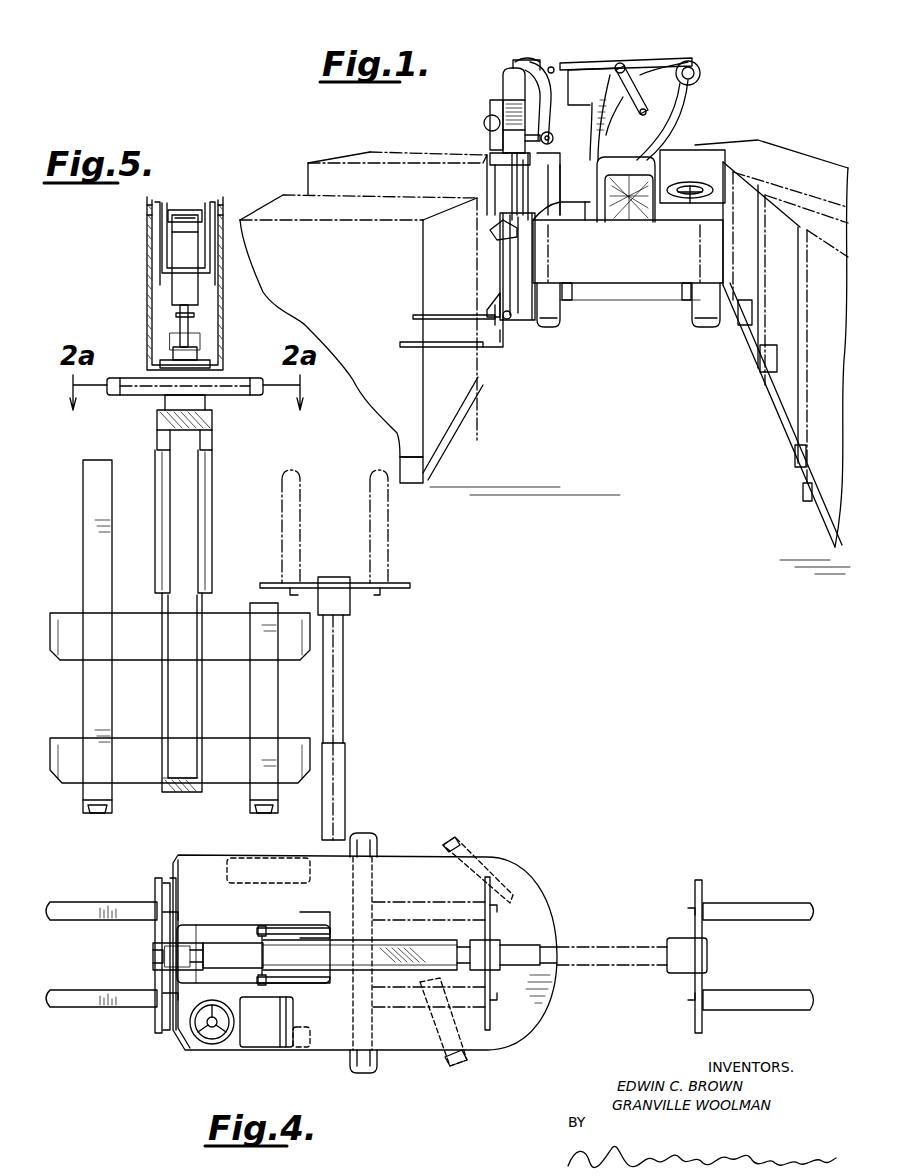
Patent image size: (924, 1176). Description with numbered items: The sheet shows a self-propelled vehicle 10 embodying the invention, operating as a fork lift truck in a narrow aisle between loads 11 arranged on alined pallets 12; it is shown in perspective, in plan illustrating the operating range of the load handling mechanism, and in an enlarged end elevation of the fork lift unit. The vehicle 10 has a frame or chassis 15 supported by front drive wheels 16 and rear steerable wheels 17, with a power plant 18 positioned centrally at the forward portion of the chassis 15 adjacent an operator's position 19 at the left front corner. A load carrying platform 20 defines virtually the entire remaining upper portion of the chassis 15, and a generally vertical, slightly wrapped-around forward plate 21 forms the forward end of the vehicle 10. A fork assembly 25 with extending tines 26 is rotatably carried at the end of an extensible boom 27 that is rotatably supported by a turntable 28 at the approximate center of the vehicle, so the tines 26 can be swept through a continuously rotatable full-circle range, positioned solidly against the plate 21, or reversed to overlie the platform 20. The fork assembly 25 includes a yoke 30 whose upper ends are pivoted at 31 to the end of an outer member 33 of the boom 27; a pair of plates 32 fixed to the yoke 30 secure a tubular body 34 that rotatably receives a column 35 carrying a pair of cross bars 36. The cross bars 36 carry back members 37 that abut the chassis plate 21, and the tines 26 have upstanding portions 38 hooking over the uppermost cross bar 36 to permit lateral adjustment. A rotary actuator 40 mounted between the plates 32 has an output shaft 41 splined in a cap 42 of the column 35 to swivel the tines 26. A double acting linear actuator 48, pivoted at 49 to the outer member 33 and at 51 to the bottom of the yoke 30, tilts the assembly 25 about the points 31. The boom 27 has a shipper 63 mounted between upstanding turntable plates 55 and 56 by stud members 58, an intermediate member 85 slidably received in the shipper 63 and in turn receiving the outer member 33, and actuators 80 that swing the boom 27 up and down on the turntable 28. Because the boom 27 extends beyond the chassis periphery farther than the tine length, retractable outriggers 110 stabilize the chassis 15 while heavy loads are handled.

In FIG. 1, the vehicle 10 is at (627, 328).
In FIG. 4, the vehicle 10 is at (577, 852).
In FIG. 1, the loads 11 is at (740, 152).
In FIG. 1, the pallets 12 is at (425, 470).
In FIG. 1, the frame or chassis 15 is at (612, 285).
In FIG. 4, the frame or chassis 15 is at (433, 851).
In FIG. 1, the front drive wheels 16 is at (550, 328).
In FIG. 4, the front drive wheels 16 is at (228, 866).
In FIG. 1, the rear steerable wheels 17 is at (570, 300).
In FIG. 4, the rear steerable wheels 17 is at (466, 847).
In FIG. 1, the power plant 18 is at (645, 160).
In FIG. 4, the power plant 18 is at (207, 928).
In FIG. 1, the operator's position 19 is at (683, 178).
In FIG. 4, the operator's position 19 is at (265, 1040).
In FIG. 1, the load carrying platform 20 is at (561, 192).
In FIG. 4, the load carrying platform 20 is at (543, 935).
In FIG. 1, the forward plate 21 is at (640, 283).
In FIG. 4, the forward plate 21 is at (178, 1042).
In FIG. 1, the fork assembly 25 is at (483, 117).
In FIG. 5, the fork assembly 25 is at (401, 562).
In FIG. 4, the fork assembly 25 is at (754, 904).
In FIG. 1, the tines 26 is at (413, 314).
In FIG. 5, the tines 26 is at (90, 808).
In FIG. 4, the tines 26 is at (96, 902).
In FIG. 1, the extensible boom 27 is at (644, 54).
In FIG. 5, the extensible boom 27 is at (170, 282).
In FIG. 4, the extensible boom 27 is at (252, 937).
In FIG. 1, the turntable 28 is at (689, 105).
In FIG. 4, the turntable 28 is at (314, 908).
In FIG. 1, the yoke 30 is at (503, 95).
In FIG. 5, the yoke 30 is at (224, 305).
In FIG. 4, the yoke 30 is at (157, 968).
In FIG. 1, the pivot 31 is at (554, 66).
In FIG. 5, the pivot 31 is at (150, 200).
In FIG. 1, the plates 32 is at (495, 135).
In FIG. 5, the plates 32 is at (162, 342).
In FIG. 4, the plates 32 is at (154, 950).
In FIG. 5, the outer member 33 is at (163, 246).
In FIG. 4, the outer member 33 is at (205, 955).
In FIG. 1, the tubular body 34 is at (513, 200).
In FIG. 5, the tubular body 34 is at (210, 512).
In FIG. 5, the column 35 is at (195, 703).
In FIG. 1, the cross bars 36 is at (497, 243).
In FIG. 5, the cross bars 36 is at (230, 622).
In FIG. 4, the cross bars 36 is at (172, 1025).
In FIG. 1, the back members 37 is at (515, 255).
In FIG. 4, the back members 37 is at (165, 908).
In FIG. 1, the upstanding portions 38 is at (492, 175).
In FIG. 5, the upstanding portions 38 is at (84, 590).
In FIG. 1, the actuator 40 is at (554, 138).
In FIG. 5, the actuator 40 is at (232, 384).
In FIG. 5, the output shaft 41 is at (170, 418).
In FIG. 5, the cap 42 is at (212, 450).
In FIG. 1, the linear actuator 48 is at (513, 72).
In FIG. 5, the linear actuator 48 is at (178, 300).
In FIG. 4, the linear actuator 48 is at (168, 946).
In FIG. 1, the pivotal connection 49 is at (526, 62).
In FIG. 5, the pivotal connection 49 is at (178, 208).
In FIG. 5, the pivotal connection 51 is at (160, 363).
In FIG. 1, the turntable plate 55 is at (668, 68).
In FIG. 1, the turntable plate 56 is at (608, 130).
In FIG. 1, the stud members 58 is at (700, 70).
In FIG. 1, the shipper 63 is at (619, 63).
In FIG. 1, the actuators 80 is at (640, 100).
In FIG. 4, the actuators 80 is at (325, 930).
In FIG. 5, the intermediate member 85 is at (346, 812).
In FIG. 4, the retractable outriggers 110 is at (378, 845).